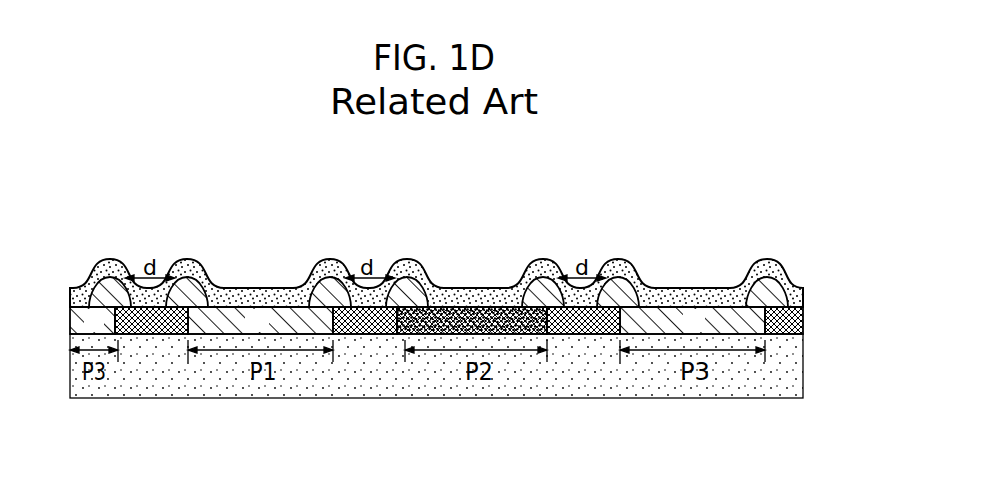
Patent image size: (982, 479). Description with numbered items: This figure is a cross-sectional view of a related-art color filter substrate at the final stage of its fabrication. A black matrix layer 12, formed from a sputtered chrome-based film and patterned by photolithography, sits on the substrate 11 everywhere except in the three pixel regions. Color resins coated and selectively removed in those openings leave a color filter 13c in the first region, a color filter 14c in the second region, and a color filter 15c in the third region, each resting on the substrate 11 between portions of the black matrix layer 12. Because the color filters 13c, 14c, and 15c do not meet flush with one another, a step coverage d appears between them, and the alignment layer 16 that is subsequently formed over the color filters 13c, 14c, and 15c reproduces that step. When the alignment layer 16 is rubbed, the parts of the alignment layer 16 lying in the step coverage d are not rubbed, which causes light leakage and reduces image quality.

The substrate 11 is at (782, 384).
The black matrix layer 12 is at (803, 318).
The color filter 13c is at (223, 328).
The color filter 14c is at (447, 337).
The color filter 15c is at (663, 330).
The alignment layer 16 is at (803, 292).